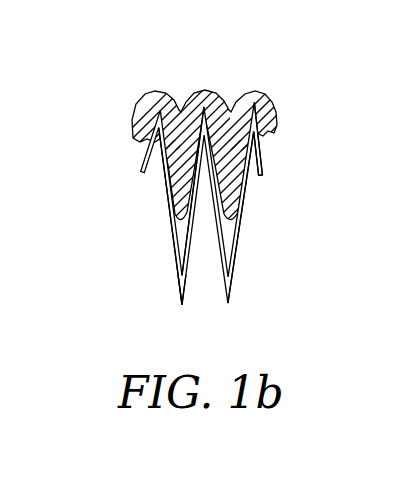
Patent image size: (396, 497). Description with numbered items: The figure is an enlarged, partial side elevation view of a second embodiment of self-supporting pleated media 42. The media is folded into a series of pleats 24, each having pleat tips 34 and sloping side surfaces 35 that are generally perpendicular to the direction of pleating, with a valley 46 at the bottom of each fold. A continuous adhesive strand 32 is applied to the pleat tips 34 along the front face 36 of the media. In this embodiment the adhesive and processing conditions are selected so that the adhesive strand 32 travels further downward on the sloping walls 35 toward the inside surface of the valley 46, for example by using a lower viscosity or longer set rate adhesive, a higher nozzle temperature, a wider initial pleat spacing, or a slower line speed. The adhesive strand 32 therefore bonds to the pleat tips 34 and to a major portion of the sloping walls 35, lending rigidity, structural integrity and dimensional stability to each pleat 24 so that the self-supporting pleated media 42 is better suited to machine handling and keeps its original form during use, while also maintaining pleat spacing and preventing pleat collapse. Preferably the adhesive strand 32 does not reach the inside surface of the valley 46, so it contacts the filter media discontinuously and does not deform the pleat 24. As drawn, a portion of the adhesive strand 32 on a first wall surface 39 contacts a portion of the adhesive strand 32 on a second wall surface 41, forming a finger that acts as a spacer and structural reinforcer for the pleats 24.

The front face 36 is at (191, 60).
The adhesive strand 32 is at (150, 93).
The pleat tips 34 is at (259, 98).
The pleat 24 is at (158, 208).
The first wall surface 39 is at (168, 229).
The second wall surface 41 is at (188, 246).
The sloping side surfaces 35 is at (241, 228).
The self-supporting pleated media 42 is at (291, 149).
The valley 46 is at (180, 306).